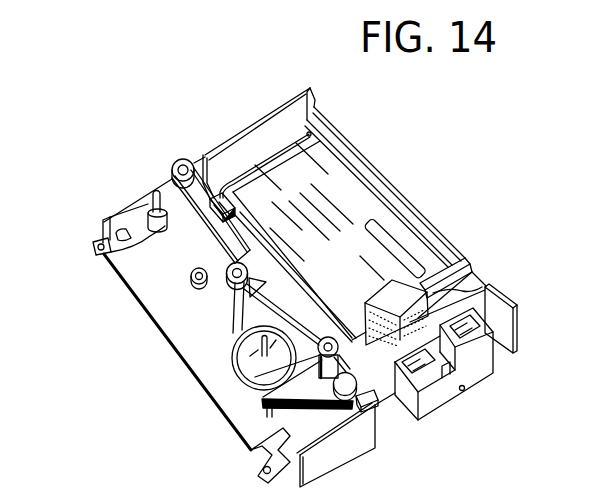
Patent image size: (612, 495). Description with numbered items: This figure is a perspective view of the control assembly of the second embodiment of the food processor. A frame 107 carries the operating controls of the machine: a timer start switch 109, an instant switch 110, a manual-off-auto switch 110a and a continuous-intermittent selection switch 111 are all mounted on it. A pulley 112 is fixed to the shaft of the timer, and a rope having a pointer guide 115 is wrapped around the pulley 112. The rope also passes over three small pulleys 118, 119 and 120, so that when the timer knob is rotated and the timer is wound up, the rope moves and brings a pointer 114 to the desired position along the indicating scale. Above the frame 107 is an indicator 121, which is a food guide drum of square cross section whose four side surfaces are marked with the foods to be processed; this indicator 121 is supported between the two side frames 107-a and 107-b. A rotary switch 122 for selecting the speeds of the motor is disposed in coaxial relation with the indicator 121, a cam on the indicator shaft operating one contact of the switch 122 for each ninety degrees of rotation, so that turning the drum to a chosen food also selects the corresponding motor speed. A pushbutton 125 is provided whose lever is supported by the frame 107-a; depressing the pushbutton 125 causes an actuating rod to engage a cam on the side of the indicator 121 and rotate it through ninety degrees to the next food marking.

The frame 107 is at (246, 423).
The frame 107-a is at (478, 310).
The frame 107-b is at (305, 95).
The timer start switch 109 is at (378, 410).
The instant switch 110 is at (153, 191).
The manual-off-auto switch 110a is at (113, 257).
The continuous-intermittent selection switch 111 is at (193, 281).
The pulley 112 is at (243, 367).
The pointer 114 is at (273, 150).
The pointer guide 115 is at (212, 196).
The small pulley 118 is at (380, 404).
The small pulley 119 is at (186, 158).
The small pulley 120 is at (232, 283).
The indicator 121 is at (368, 197).
The rotary switch 122 is at (480, 373).
The pushbutton 125 is at (477, 277).